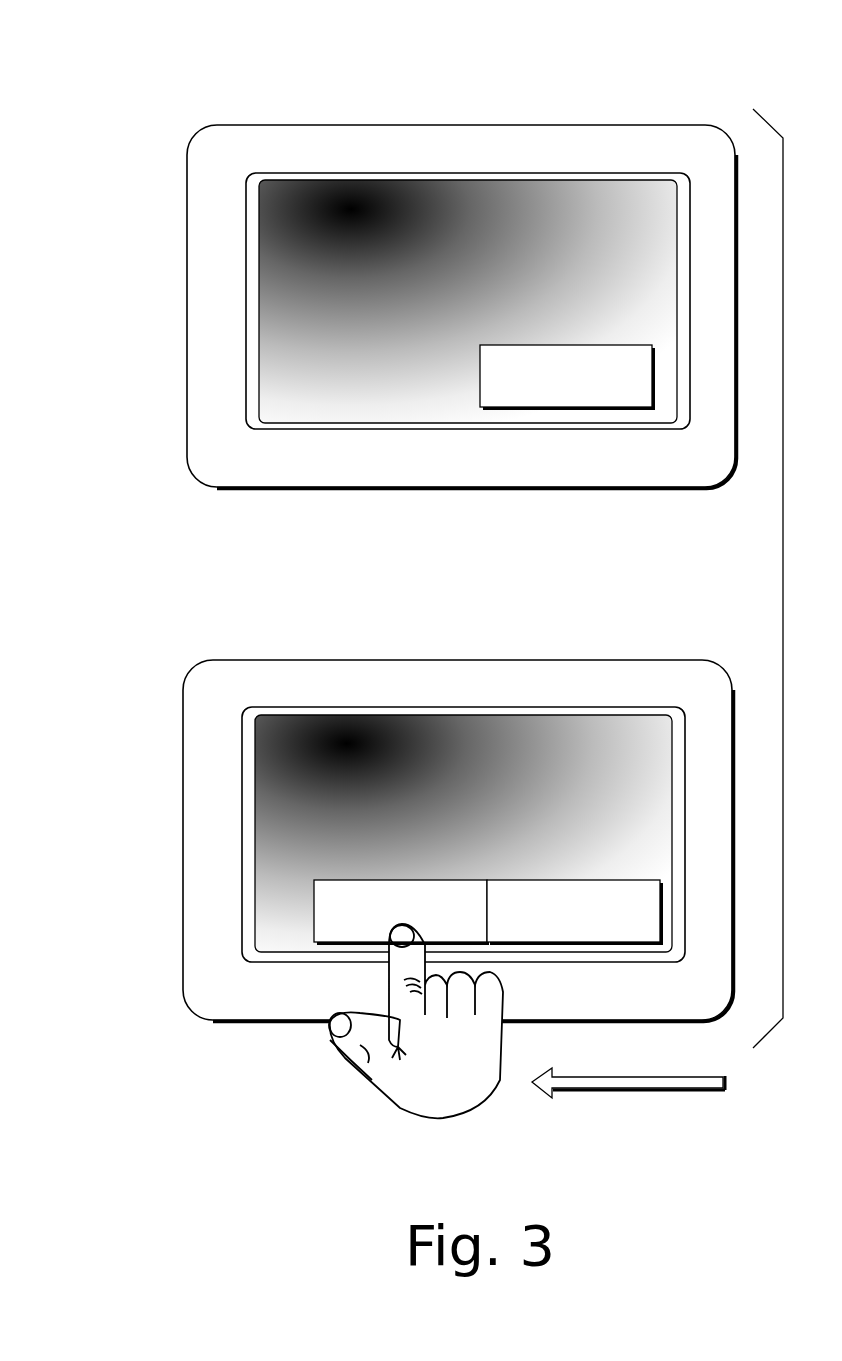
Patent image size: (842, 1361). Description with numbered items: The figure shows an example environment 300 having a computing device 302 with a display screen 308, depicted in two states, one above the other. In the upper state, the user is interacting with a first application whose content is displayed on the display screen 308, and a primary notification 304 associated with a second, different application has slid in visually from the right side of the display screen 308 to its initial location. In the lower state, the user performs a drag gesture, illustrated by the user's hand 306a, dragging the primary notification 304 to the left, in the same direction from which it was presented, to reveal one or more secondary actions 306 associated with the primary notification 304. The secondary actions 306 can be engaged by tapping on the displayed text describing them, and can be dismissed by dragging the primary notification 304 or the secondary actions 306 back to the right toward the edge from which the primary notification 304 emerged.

The environment 300 is at (188, 92).
The computing device 302 is at (378, 127).
The primary notification 304 is at (565, 345).
The secondary actions 306 is at (573, 880).
The user's hand 306a is at (465, 1066).
The display screen 308 is at (656, 205).